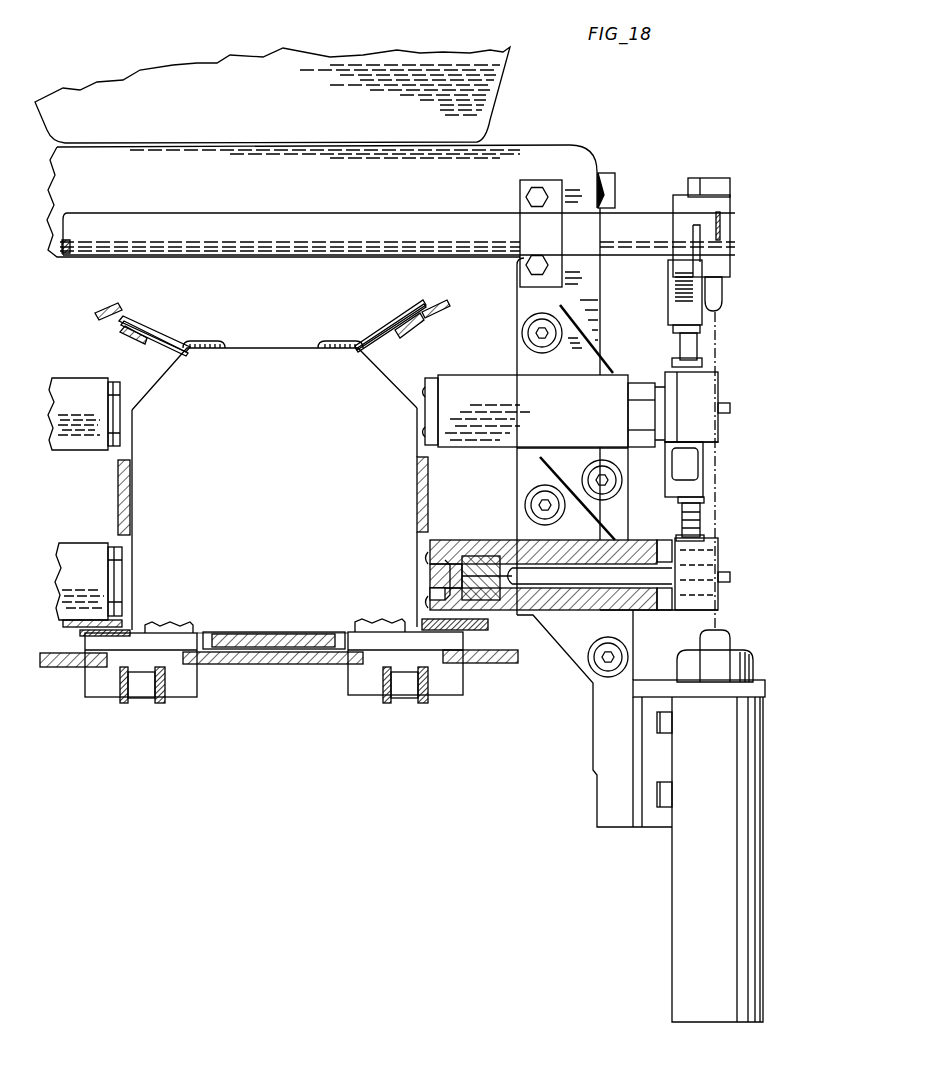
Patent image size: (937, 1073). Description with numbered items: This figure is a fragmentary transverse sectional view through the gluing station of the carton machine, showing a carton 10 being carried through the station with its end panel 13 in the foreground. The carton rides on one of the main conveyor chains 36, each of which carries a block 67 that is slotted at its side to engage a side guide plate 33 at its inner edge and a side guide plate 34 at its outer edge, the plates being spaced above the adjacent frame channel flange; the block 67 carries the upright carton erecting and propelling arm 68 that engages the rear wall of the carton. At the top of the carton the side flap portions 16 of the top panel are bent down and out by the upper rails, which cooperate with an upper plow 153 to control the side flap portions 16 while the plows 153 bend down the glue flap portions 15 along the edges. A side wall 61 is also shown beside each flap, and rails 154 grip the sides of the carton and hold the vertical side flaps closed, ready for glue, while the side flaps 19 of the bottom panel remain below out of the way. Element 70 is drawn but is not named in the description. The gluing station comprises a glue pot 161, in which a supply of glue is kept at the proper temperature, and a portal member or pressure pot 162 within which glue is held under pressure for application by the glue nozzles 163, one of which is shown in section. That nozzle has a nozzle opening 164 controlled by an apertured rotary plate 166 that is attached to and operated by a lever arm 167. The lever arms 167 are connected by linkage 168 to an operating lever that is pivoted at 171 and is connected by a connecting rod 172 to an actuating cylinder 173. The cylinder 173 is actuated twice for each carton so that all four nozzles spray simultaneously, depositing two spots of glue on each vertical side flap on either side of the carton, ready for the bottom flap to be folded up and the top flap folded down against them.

The carton 10 is at (260, 360).
The end panel 13 is at (286, 500).
The flap portion 15 is at (108, 336).
The side flap portion of top panel 16 is at (160, 336).
The side flap of bottom panel 19 is at (77, 633).
The central raised pad portion / side guide plate 33 is at (265, 663).
The side guide plate 34 is at (50, 663).
The main conveyor chain 36 is at (147, 688).
The side wall 61 is at (138, 341).
The block 67 is at (105, 688).
The carton erecting and propelling arm 68 is at (177, 623).
The stop 70 is at (205, 340).
The upper plow 153 is at (100, 316).
The rail 154 is at (118, 487).
The glue pot 161 is at (488, 72).
The pressure pot 162 is at (578, 158).
The glue nozzle 163 is at (613, 385).
The nozzle opening 164 is at (430, 592).
The apertured rotary plate 166 is at (466, 513).
The lever arm 167 is at (718, 553).
The linkage 168 is at (701, 520).
The pivot 171 is at (718, 227).
The connecting rod 172 is at (723, 300).
The actuating cylinder 173 is at (740, 907).